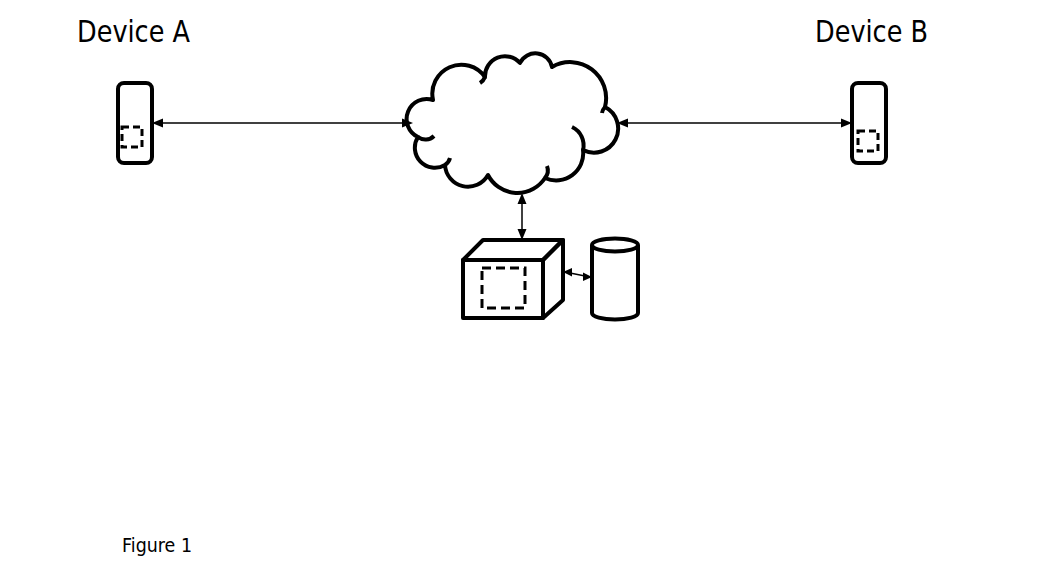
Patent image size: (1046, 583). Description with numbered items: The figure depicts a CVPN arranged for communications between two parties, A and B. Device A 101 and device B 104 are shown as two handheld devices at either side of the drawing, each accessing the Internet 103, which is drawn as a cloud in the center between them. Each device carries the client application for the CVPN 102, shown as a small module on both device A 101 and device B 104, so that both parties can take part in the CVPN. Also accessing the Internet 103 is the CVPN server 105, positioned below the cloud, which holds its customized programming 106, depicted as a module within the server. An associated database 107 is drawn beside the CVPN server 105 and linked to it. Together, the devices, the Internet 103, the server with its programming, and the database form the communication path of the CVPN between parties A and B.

The device A 101 is at (118, 120).
The client application for the CVPN 102 is at (140, 147).
The Internet 103 is at (513, 104).
The device B 104 is at (887, 125).
The CVPN server 105 is at (463, 272).
The customized programming 106 is at (512, 293).
The database 107 is at (615, 302).